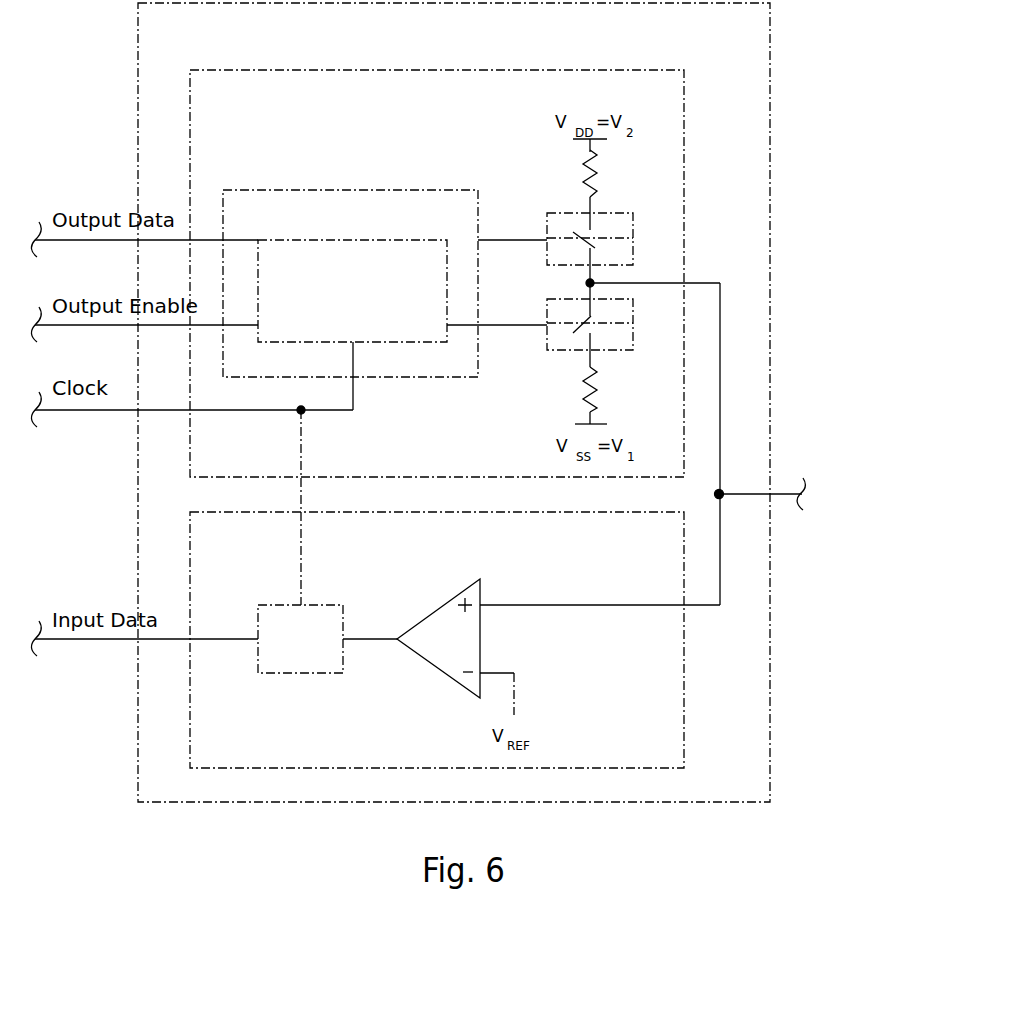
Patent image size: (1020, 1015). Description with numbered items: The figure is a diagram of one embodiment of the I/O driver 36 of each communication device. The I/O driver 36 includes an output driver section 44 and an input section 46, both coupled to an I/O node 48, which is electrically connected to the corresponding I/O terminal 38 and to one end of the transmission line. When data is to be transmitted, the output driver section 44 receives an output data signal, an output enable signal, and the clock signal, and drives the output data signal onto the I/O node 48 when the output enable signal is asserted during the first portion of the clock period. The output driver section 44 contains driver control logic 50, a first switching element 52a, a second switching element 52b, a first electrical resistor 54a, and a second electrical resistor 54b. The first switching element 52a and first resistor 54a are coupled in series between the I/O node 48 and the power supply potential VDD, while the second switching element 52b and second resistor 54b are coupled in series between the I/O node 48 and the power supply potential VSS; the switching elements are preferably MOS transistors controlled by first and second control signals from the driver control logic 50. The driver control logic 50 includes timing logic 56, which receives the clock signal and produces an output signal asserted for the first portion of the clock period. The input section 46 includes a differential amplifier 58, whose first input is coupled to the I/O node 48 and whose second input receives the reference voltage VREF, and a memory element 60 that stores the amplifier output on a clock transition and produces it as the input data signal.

The I/O driver 36 is at (760, 34).
The output driver section 44 is at (445, 102).
The input section 46 is at (677, 542).
The driver control logic 50 is at (468, 219).
The timing logic 56 is at (364, 314).
The first switching element 52a is at (555, 213).
The second switching element 52b is at (556, 352).
The first electrical resistor 54a is at (600, 173).
The second electrical resistor 54b is at (598, 388).
The I/O node 48 is at (722, 500).
The I/O terminal 38 is at (852, 495).
The memory element 60 is at (319, 605).
The differential amplifier 58 is at (428, 613).